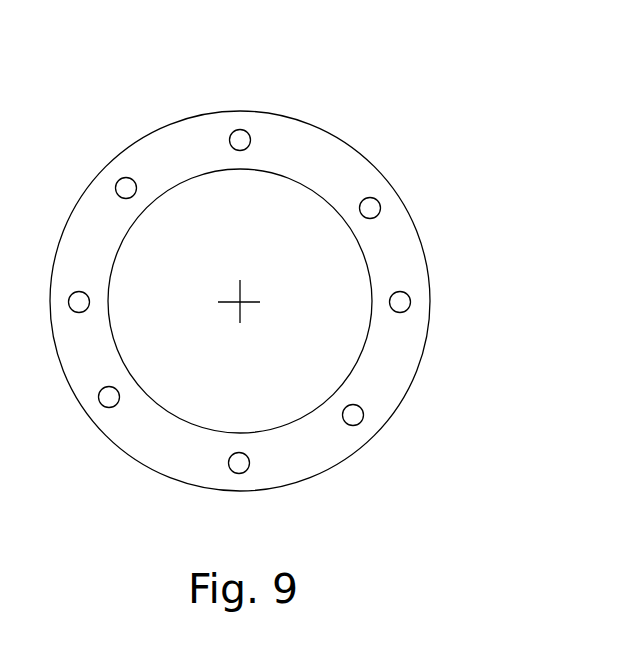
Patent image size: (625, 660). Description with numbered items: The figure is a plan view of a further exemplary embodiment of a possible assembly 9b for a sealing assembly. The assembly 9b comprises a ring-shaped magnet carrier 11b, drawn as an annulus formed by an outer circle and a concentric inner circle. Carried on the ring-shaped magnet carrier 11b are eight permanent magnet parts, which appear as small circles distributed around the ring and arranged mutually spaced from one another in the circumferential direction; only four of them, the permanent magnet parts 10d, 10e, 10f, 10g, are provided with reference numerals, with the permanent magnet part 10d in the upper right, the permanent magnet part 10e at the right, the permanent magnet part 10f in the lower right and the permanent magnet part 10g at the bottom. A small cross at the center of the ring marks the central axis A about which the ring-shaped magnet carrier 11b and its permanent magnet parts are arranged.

The assembly 9b is at (384, 143).
The ring-shaped magnet carrier 11b is at (290, 145).
The central axis A is at (240, 302).
The permanent magnet part 10d is at (372, 210).
The permanent magnet part 10e is at (402, 305).
The permanent magnet part 10f is at (355, 415).
The permanent magnet part 10g is at (245, 463).